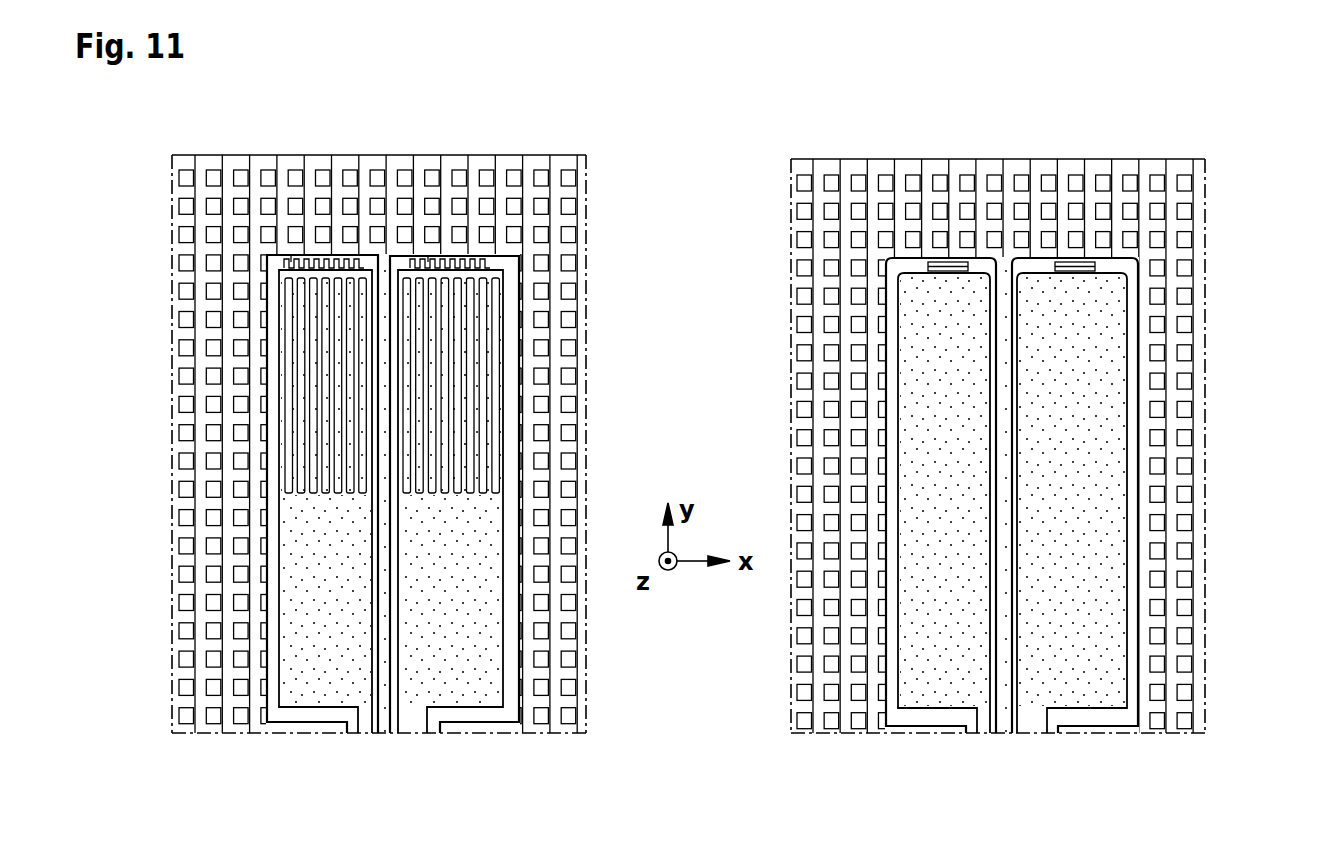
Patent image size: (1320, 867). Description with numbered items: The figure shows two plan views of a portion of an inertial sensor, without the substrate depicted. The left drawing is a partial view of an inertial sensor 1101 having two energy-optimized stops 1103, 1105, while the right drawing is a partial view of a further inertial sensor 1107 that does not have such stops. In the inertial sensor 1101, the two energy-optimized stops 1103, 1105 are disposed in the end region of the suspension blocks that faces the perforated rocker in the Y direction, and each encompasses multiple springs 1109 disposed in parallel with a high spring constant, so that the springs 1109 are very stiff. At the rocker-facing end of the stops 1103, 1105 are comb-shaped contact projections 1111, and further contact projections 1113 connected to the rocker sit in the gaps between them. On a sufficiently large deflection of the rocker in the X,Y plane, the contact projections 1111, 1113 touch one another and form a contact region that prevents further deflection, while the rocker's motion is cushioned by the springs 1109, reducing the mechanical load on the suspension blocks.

The inertial sensor 1101 is at (604, 122).
The energy-optimized stop 1103 is at (333, 330).
The energy-optimized stop 1105 is at (455, 332).
The inertial sensor 1107 is at (1085, 122).
The springs 1109 is at (287, 431).
The contact projections 1111 is at (288, 261).
The contact projections 1113 is at (291, 256).